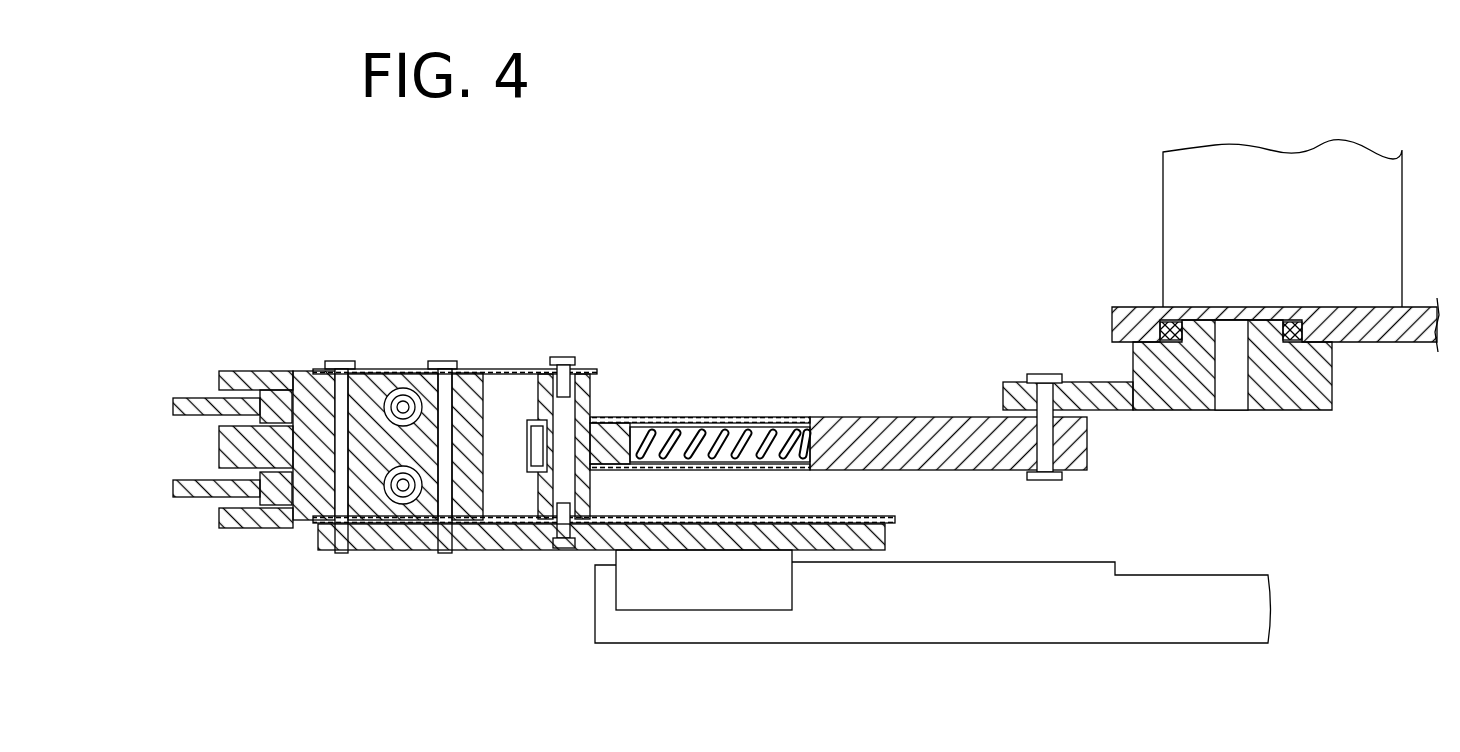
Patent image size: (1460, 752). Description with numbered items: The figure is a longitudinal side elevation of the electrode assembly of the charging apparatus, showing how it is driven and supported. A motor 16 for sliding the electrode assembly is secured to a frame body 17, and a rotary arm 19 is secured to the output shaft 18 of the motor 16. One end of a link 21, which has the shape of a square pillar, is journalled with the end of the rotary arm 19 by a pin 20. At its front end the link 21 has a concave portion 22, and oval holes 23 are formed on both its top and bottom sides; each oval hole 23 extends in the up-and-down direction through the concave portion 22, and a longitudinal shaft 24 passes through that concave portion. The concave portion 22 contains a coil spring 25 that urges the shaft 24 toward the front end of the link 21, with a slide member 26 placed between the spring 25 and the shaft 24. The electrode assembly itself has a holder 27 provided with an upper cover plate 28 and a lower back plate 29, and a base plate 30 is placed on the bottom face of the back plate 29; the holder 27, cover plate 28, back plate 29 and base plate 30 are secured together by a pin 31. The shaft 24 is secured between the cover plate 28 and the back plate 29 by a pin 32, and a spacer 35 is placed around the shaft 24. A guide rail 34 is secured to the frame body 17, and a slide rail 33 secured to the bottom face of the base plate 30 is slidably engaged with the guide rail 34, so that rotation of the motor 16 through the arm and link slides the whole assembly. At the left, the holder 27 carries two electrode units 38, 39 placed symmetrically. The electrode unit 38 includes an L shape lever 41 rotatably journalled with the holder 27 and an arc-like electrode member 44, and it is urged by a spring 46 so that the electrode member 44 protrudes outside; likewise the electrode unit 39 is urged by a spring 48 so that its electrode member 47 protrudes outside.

The motor 16 is at (1265, 165).
The frame body 17 is at (1398, 332).
The output shaft 18 is at (1232, 393).
The rotary arm 19 is at (1290, 393).
The pin 20 is at (1040, 374).
The link 21 is at (888, 418).
The concave portion 22 is at (790, 418).
The oval holes 23 is at (618, 418).
The shaft 24 is at (590, 405).
The coil spring 25 is at (743, 418).
The slide member 26 is at (643, 420).
The holder 27 is at (298, 383).
The upper cover plate 28 is at (475, 370).
The lower back plate 29 is at (897, 516).
The base plate 30 is at (478, 540).
The pin 31 is at (343, 360).
The pin 32 is at (563, 358).
The slide rail 33 is at (707, 592).
The guide rail 34 is at (907, 622).
The spacer 35 is at (530, 415).
The electrode unit 38 is at (173, 388).
The electrode unit 39 is at (180, 499).
The L shape lever 41 is at (268, 395).
The electrode member 44 is at (205, 388).
The spring 46 is at (400, 395).
The electrode member 47 is at (212, 500).
The spring 48 is at (400, 503).